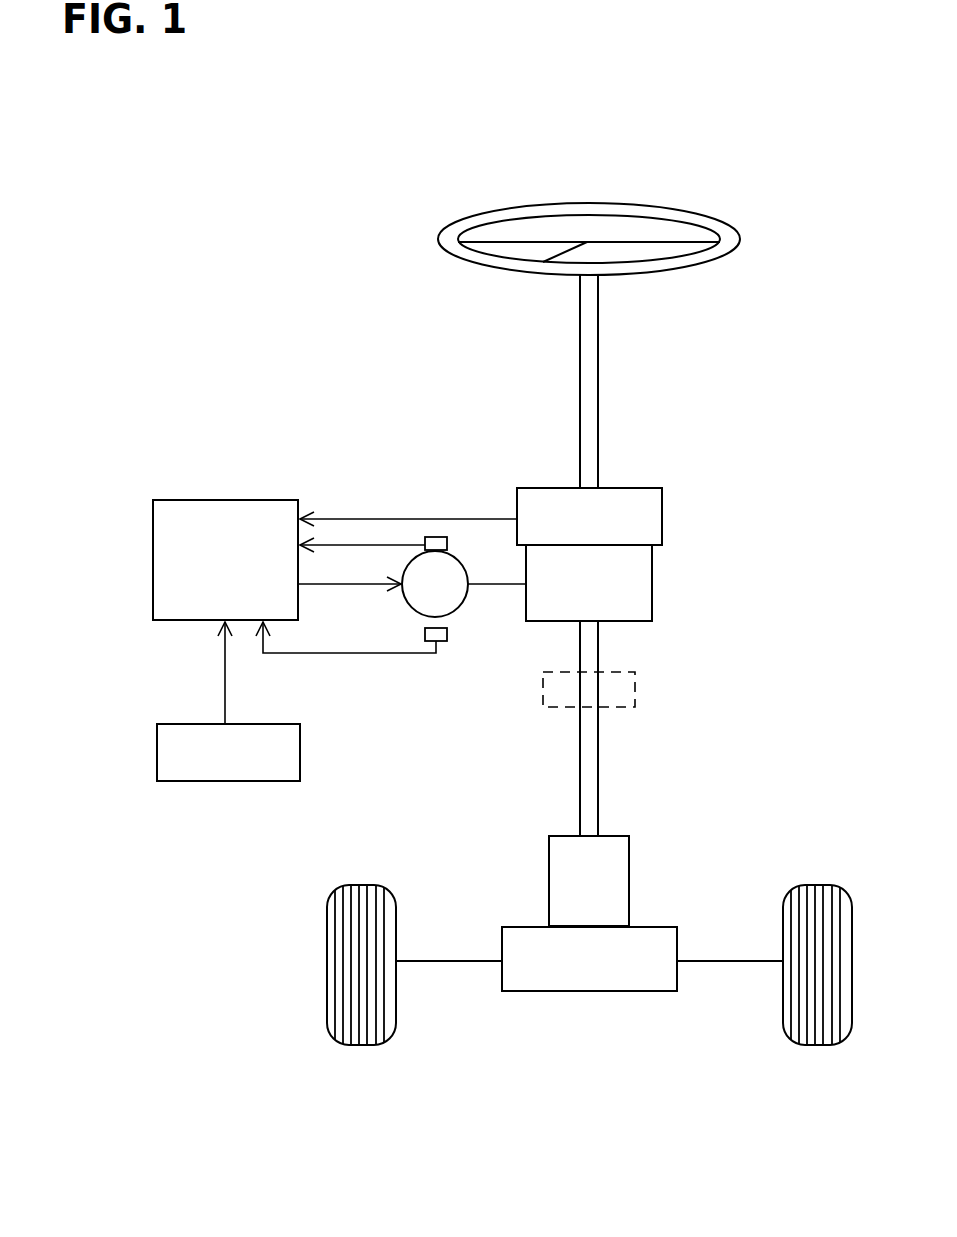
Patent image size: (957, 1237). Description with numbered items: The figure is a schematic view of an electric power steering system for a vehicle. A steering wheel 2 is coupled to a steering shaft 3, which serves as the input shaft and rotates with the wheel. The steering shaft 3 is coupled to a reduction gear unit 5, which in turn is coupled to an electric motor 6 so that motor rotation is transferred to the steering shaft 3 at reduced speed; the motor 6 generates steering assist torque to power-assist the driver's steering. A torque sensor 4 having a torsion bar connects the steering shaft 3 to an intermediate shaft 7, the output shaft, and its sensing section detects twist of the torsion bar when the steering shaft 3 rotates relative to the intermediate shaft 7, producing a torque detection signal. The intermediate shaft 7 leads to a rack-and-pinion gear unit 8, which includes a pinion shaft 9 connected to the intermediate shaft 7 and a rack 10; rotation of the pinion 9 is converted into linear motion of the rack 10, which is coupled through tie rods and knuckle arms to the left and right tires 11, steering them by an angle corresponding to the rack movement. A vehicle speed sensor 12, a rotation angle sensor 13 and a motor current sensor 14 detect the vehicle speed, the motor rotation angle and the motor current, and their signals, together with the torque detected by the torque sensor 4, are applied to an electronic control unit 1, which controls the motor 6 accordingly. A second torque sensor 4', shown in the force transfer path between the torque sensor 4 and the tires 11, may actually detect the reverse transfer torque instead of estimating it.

The electronic control unit 1 is at (178, 500).
The steering wheel 2 is at (740, 238).
The steering shaft 3 is at (598, 422).
The torque sensor 4 is at (623, 512).
The second torque sensor 4' is at (632, 680).
The reduction gear unit 5 is at (652, 590).
The electric motor 6 is at (465, 605).
The intermediate shaft 7 is at (598, 748).
The rack-and-pinion gear unit 8 is at (660, 900).
The pinion shaft 9 is at (612, 836).
The rack 10 is at (650, 993).
The tires 11 is at (358, 1045).
The vehicle speed sensor 12 is at (300, 747).
The rotation angle sensor 13 is at (447, 545).
The motor current sensor 14 is at (447, 641).